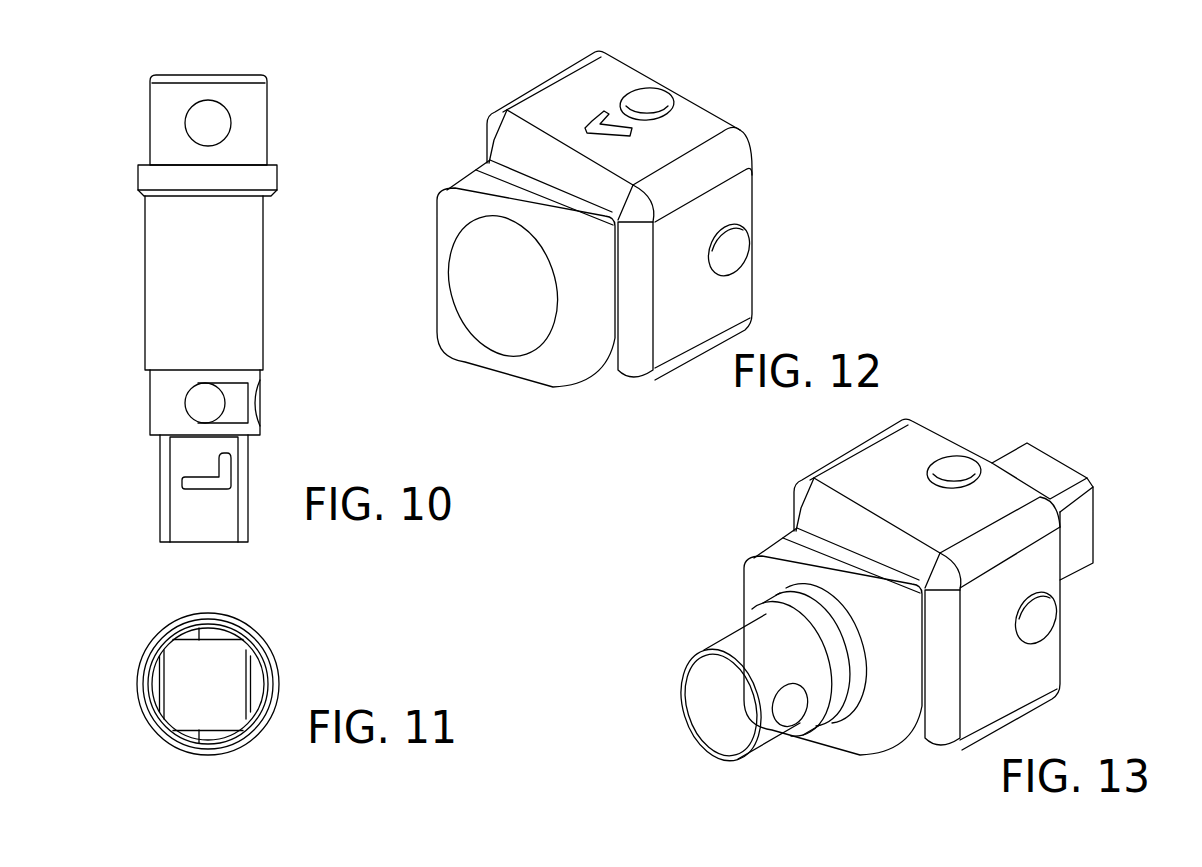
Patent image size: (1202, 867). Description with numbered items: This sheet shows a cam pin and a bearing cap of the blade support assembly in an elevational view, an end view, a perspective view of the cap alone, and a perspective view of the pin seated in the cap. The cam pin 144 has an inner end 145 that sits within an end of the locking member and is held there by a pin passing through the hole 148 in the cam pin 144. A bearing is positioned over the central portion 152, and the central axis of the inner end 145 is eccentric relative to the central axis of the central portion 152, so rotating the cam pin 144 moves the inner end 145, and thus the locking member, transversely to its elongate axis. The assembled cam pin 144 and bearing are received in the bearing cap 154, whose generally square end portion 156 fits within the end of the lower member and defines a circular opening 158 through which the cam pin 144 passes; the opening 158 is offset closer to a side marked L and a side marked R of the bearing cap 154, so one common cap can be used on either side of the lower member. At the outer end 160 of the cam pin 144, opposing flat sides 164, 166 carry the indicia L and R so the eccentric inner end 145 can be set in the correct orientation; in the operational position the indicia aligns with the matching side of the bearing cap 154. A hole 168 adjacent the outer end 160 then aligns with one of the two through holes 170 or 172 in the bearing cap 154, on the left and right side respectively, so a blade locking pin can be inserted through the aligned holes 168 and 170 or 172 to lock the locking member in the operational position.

In FIG. 10, the cam pin 144 is at (290, 280).
In FIG. 11, the cam pin 144 is at (124, 653).
In FIG. 13, the cam pin 144 is at (648, 692).
In FIG. 10, the inner end 145 is at (267, 130).
In FIG. 11, the inner end 145 is at (266, 647).
In FIG. 13, the inner end 145 is at (693, 657).
In FIG. 10, the hole 148 is at (200, 127).
In FIG. 13, the hole 148 is at (789, 712).
In FIG. 10, the central portion 152 is at (170, 262).
In FIG. 11, the central portion 152 is at (264, 675).
In FIG. 12, the bearing cap 154 is at (710, 72).
In FIG. 13, the bearing cap 154 is at (1062, 719).
In FIG. 12, the end portion 156 is at (580, 350).
In FIG. 13, the end portion 156 is at (833, 641).
In FIG. 12, the circular opening 158 is at (485, 311).
In FIG. 13, the circular opening 158 is at (826, 653).
In FIG. 10, the outer end 160 is at (160, 482).
In FIG. 13, the outer end 160 is at (1096, 524).
In FIG. 10, the flat side 164 is at (190, 523).
In FIG. 11, the flat side 164 is at (199, 630).
In FIG. 13, the flat side 164 is at (999, 444).
In FIG. 11, the flat side 166 is at (199, 740).
In FIG. 13, the flat side 166 is at (1084, 510).
In FIG. 10, the hole 168 is at (200, 402).
In FIG. 12, the through hole 170 is at (654, 100).
In FIG. 13, the through hole 170 is at (1040, 622).
In FIG. 12, the through hole 172 is at (738, 244).
In FIG. 13, the through hole 172 is at (950, 468).